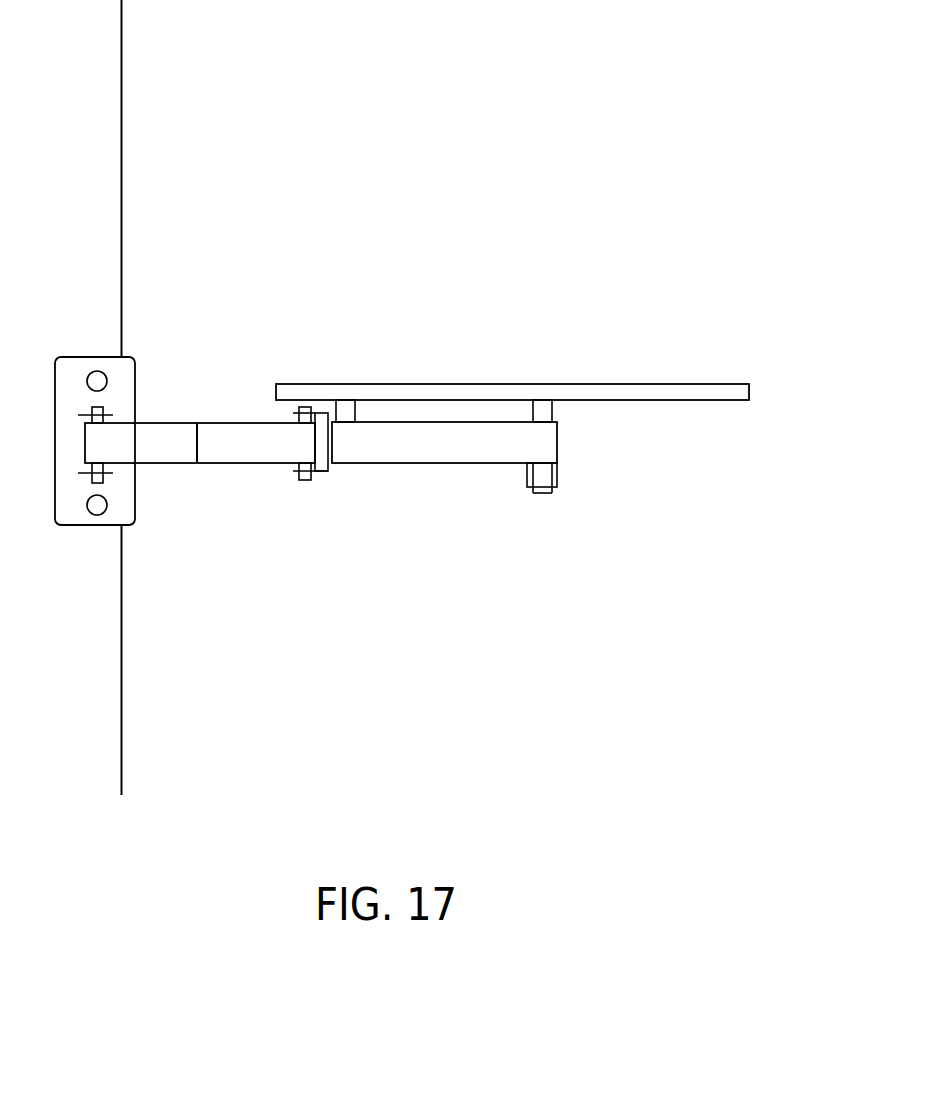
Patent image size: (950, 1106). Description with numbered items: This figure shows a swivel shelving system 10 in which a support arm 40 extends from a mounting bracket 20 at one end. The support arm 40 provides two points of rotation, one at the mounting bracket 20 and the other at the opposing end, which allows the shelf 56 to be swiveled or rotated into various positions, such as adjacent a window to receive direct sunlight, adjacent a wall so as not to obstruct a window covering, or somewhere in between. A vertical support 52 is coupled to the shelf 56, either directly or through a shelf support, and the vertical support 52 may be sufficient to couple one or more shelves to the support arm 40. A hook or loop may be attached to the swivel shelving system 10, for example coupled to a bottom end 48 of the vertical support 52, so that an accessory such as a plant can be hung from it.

The swivel shelving system 10 is at (391, 397).
The mounting bracket 20 is at (77, 583).
The support arm 40 is at (285, 452).
The bottom end 48 is at (543, 488).
The vertical support 52 is at (547, 409).
The shelf 56 is at (427, 387).